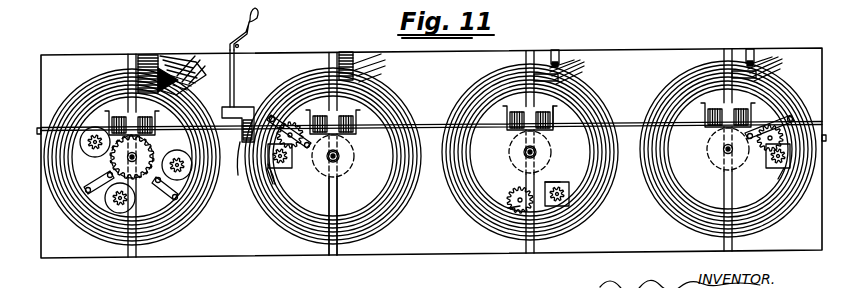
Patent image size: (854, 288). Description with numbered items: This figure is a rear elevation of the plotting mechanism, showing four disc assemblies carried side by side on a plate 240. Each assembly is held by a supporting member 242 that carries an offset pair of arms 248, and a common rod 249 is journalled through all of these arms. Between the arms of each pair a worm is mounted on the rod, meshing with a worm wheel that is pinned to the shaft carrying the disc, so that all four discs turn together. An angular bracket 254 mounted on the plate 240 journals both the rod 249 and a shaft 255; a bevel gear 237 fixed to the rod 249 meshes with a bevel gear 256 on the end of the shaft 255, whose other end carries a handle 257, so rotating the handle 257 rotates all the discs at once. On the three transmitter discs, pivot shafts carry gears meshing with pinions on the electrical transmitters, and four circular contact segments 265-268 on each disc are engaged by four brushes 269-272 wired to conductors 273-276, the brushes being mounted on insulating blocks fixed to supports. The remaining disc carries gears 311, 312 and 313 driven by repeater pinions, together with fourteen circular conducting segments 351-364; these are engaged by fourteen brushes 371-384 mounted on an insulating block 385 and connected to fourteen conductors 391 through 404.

The bevel gear 237 is at (238, 175).
The plate 240 is at (437, 242).
The supporting member 242 is at (330, 247).
The pair of arms 248 is at (570, 116).
The rod 249 is at (158, 125).
The angular bracket 254 is at (240, 110).
The shaft 255 is at (235, 68).
The bevel gear 256 is at (228, 106).
The handle 257 is at (260, 20).
The circular contact segments 265-268 is at (348, 156).
The brushes 269-272 is at (371, 59).
The conductors 273-276 is at (400, 68).
The gear 311 is at (128, 138).
The gear 312 is at (92, 175).
The gear 313 is at (162, 198).
The circular segments 351-364 is at (132, 135).
The brushes 371-384 is at (150, 55).
The block of insulating material 385 is at (156, 60).
The conductor 391 is at (184, 64).
The conductor 404 is at (182, 62).